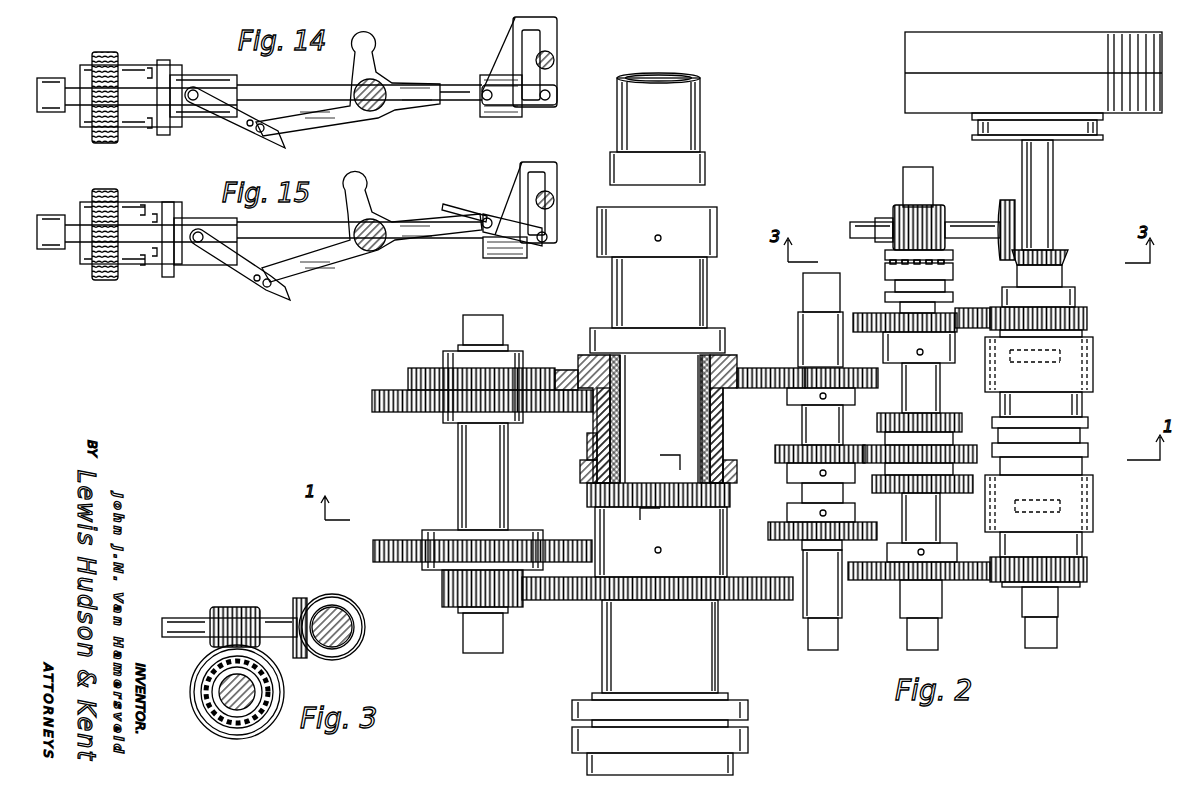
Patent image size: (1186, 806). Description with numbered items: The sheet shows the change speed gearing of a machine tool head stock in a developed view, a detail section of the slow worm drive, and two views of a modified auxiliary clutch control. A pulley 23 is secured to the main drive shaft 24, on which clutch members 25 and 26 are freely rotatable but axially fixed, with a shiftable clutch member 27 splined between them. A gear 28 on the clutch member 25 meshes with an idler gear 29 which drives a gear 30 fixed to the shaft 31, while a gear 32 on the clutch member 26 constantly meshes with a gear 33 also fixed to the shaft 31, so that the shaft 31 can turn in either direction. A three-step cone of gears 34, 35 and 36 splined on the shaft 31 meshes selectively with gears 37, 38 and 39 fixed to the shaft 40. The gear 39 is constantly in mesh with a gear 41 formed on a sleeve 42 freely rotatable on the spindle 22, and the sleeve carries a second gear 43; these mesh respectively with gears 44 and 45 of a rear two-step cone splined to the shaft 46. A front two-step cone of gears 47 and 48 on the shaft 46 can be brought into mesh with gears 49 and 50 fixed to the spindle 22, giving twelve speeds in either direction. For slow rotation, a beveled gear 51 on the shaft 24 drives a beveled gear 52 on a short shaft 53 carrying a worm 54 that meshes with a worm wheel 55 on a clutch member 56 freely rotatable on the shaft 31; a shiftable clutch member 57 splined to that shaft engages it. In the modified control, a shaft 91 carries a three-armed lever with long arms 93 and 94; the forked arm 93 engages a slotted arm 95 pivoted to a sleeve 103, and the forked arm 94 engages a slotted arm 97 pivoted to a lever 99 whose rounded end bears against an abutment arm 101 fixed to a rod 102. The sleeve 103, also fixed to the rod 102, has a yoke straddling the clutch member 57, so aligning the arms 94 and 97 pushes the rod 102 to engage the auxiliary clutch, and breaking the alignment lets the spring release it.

In FIG. 2, the spindle 22 is at (605, 652).
In FIG. 2, the pulley 23 is at (1132, 108).
In FIG. 2, the main drive shaft 24 is at (1045, 203).
In FIG. 3, the main drive shaft 24 is at (352, 640).
In FIG. 2, the clutch member 25 is at (1093, 365).
In FIG. 2, the clutch member 26 is at (1093, 505).
In FIG. 2, the shiftable clutch member 27 is at (1085, 436).
In FIG. 2, the gear 28 is at (1088, 318).
In FIG. 2, the idler gear 29 is at (975, 310).
In FIG. 2, the gear 30 is at (860, 313).
In FIG. 2, the shaft 31 is at (932, 386).
In FIG. 3, the shaft 31 is at (220, 696).
In FIG. 2, the gear 32 is at (1087, 570).
In FIG. 2, the gear 33 is at (962, 580).
In FIG. 2, the gear 34 is at (955, 493).
In FIG. 2, the gear 35 is at (972, 448).
In FIG. 2, the gear 36 is at (950, 413).
In FIG. 2, the gear 37 is at (772, 532).
In FIG. 2, the gear 38 is at (778, 458).
In FIG. 2, the gear 39 is at (787, 390).
In FIG. 2, the shaft 40 is at (840, 600).
In FIG. 2, the gear 41 is at (740, 372).
In FIG. 2, the sleeve 42 is at (597, 418).
In FIG. 2, the gear 43 is at (587, 448).
In FIG. 2, the gear 44 is at (408, 380).
In FIG. 2, the gear 45 is at (372, 400).
In FIG. 2, the shaft 46 is at (460, 468).
In FIG. 2, the gear 47 is at (442, 592).
In FIG. 2, the gear 48 is at (373, 552).
In FIG. 2, the gear 49 is at (572, 600).
In FIG. 2, the gear 50 is at (588, 496).
In FIG. 2, the beveled gear 51 is at (1062, 258).
In FIG. 3, the beveled gear 51 is at (348, 600).
In FIG. 2, the beveled gear 52 is at (1008, 200).
In FIG. 3, the beveled gear 52 is at (300, 598).
In FIG. 2, the short shaft 53 is at (970, 222).
In FIG. 3, the short shaft 53 is at (178, 618).
In FIG. 2, the worm 54 is at (897, 212).
In FIG. 3, the worm 54 is at (230, 607).
In FIG. 2, the worm wheel 55 is at (873, 224).
In FIG. 3, the worm wheel 55 is at (283, 688).
In FIG. 2, the clutch member 56 is at (885, 255).
In FIG. 14, the clutch member 56 is at (130, 130).
In FIG. 15, the clutch member 56 is at (132, 272).
In FIG. 2, the shiftable clutch member 57 is at (945, 290).
In FIG. 14, the shiftable clutch member 57 is at (150, 72).
In FIG. 15, the shiftable clutch member 57 is at (164, 277).
In FIG. 14, the shaft 91 is at (375, 112).
In FIG. 15, the shaft 91 is at (375, 262).
In FIG. 14, the arm 93 is at (328, 120).
In FIG. 15, the arm 93 is at (328, 270).
In FIG. 14, the arm 94 is at (419, 105).
In FIG. 15, the arm 94 is at (419, 245).
In FIG. 14, the arm 95 is at (224, 114).
In FIG. 15, the arm 95 is at (224, 270).
In FIG. 14, the arm 97 is at (530, 107).
In FIG. 15, the arm 97 is at (516, 242).
In FIG. 14, the lever 99 is at (557, 72).
In FIG. 15, the lever 99 is at (526, 202).
In FIG. 14, the abutment arm 101 is at (500, 62).
In FIG. 15, the rod 102 is at (295, 236).
In FIG. 14, the sleeve 103 is at (205, 75).